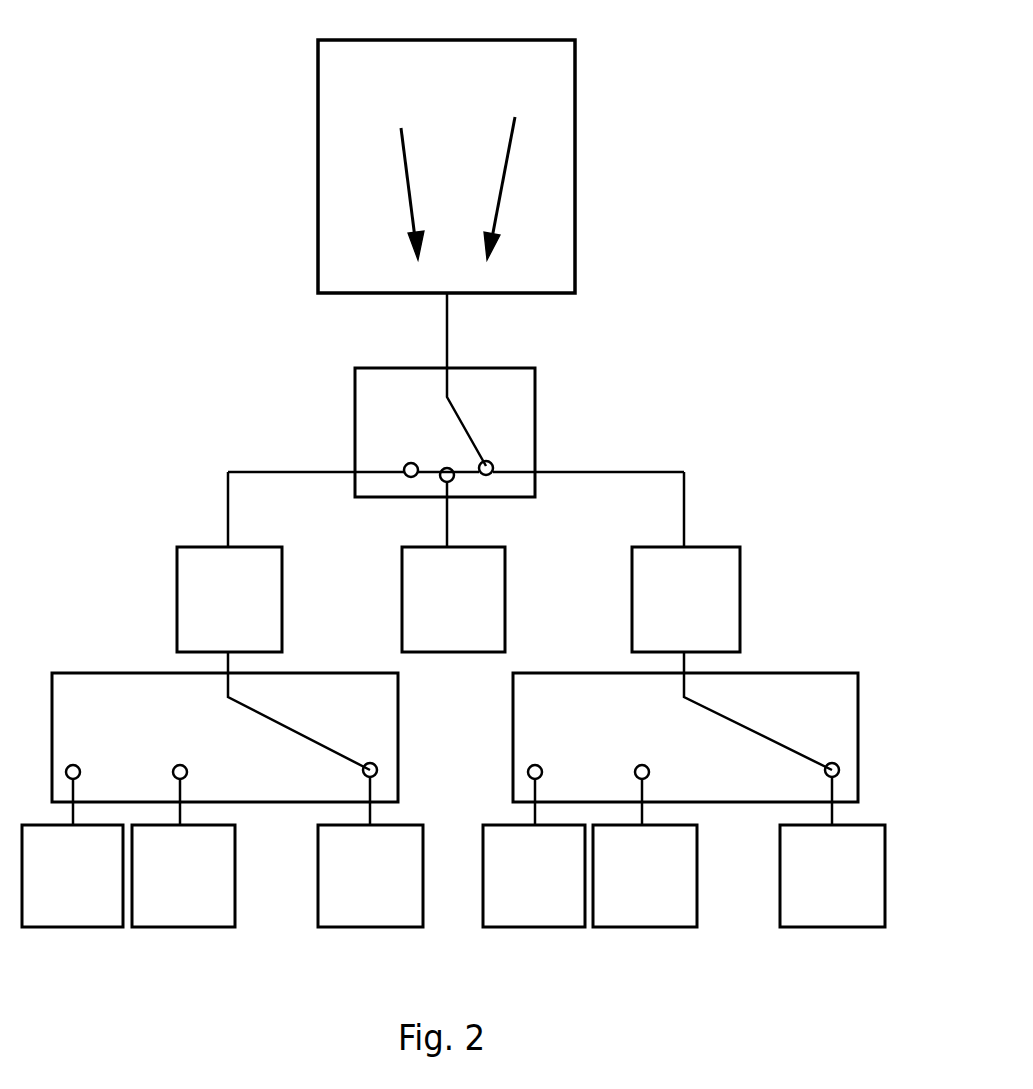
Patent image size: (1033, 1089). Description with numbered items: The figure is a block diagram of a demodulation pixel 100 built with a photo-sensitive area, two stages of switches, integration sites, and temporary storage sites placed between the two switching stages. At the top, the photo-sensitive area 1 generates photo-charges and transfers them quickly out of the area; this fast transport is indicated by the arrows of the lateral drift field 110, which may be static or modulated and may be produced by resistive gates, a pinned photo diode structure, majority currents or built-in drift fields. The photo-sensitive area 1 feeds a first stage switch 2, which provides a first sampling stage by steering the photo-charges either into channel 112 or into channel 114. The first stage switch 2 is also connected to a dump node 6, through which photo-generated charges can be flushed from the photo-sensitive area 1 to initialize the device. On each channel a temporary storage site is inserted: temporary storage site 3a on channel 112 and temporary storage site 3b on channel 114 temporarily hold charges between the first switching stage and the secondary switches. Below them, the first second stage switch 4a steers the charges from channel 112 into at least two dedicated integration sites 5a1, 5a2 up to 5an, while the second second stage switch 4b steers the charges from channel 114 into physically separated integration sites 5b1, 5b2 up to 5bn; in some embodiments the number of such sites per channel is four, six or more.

The demodulation pixel 100 is at (690, 74).
The photo-sensitive area 1 is at (446, 166).
The lateral drift field 110 is at (407, 188).
The first stage switch 2 is at (497, 422).
The channel 112 is at (228, 518).
The channel 114 is at (684, 515).
The temporary storage site 3a is at (229, 599).
The temporary storage site 3b is at (686, 599).
The dump node 6 is at (453, 567).
The first second stage switch 4a is at (225, 772).
The second second stage switch 4b is at (685, 772).
The integration site 5a1 is at (72, 853).
The integration site 5a2 is at (183, 853).
The integration site 5an is at (370, 852).
The integration site 5b1 is at (534, 853).
The integration site 5b2 is at (645, 853).
The integration site 5bn is at (832, 852).